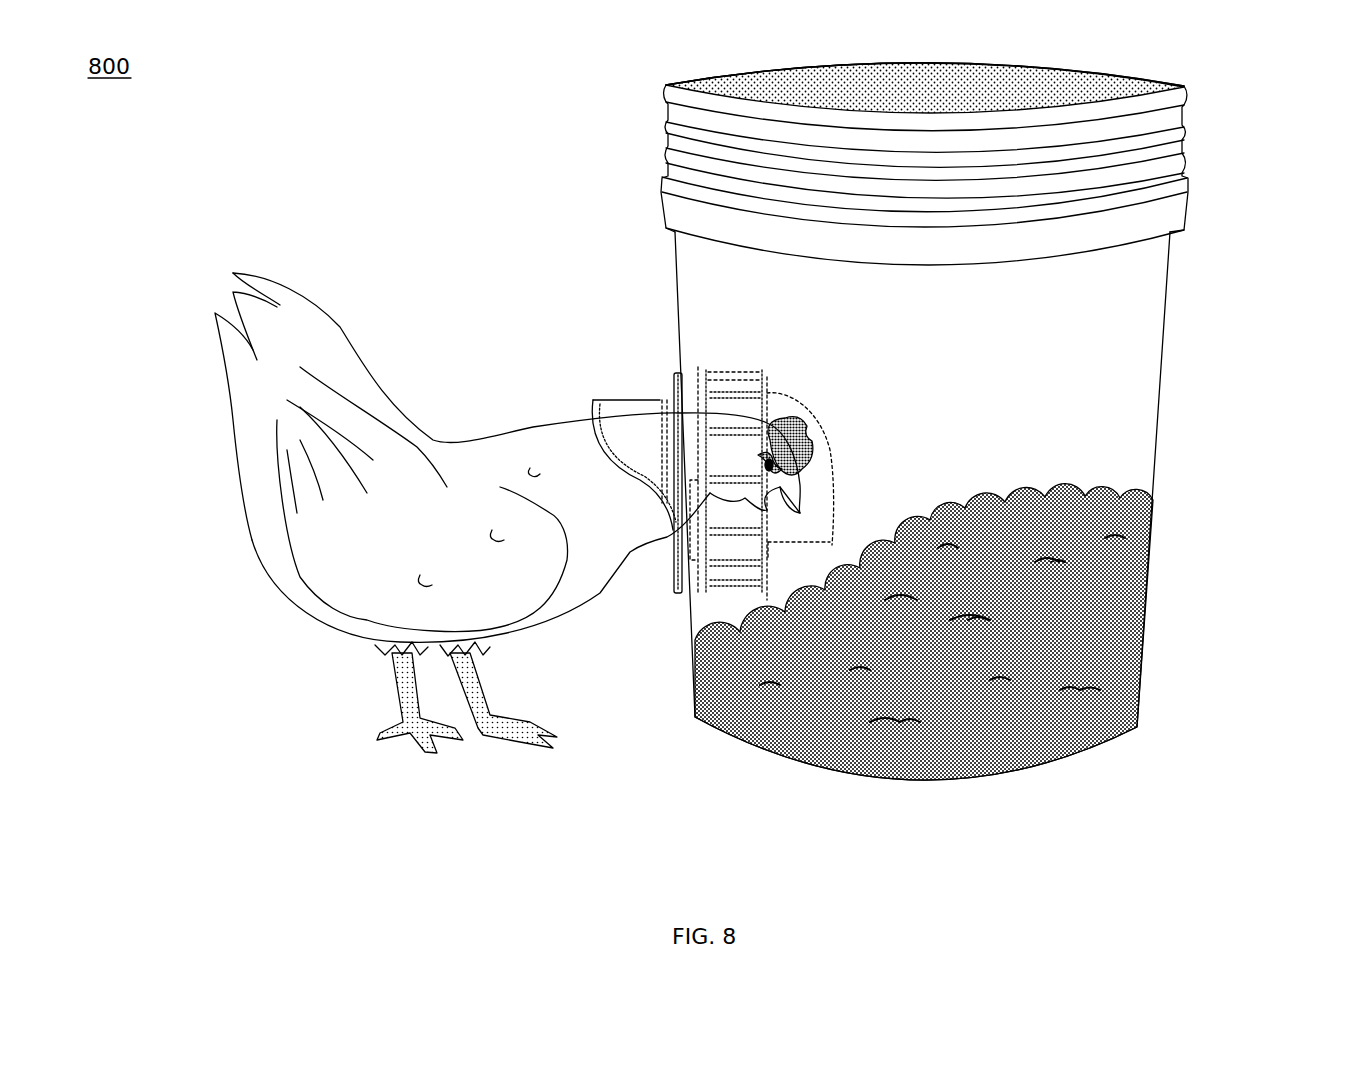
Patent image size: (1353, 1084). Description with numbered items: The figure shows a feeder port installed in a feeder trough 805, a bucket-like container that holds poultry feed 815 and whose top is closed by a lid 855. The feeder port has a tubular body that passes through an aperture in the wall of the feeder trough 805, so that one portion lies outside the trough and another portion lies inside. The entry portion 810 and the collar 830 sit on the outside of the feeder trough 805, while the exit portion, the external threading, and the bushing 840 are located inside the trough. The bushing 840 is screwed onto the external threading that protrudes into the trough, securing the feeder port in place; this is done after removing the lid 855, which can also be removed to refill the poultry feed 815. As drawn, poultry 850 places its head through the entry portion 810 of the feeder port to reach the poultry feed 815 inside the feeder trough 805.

The feeder trough 805 is at (1151, 340).
The entry portion 810 is at (669, 540).
The poultry feed 815 is at (1138, 663).
The collar 830 is at (669, 370).
The bushing 840 is at (768, 376).
The poultry 850 is at (236, 445).
The lid 855 is at (1180, 103).